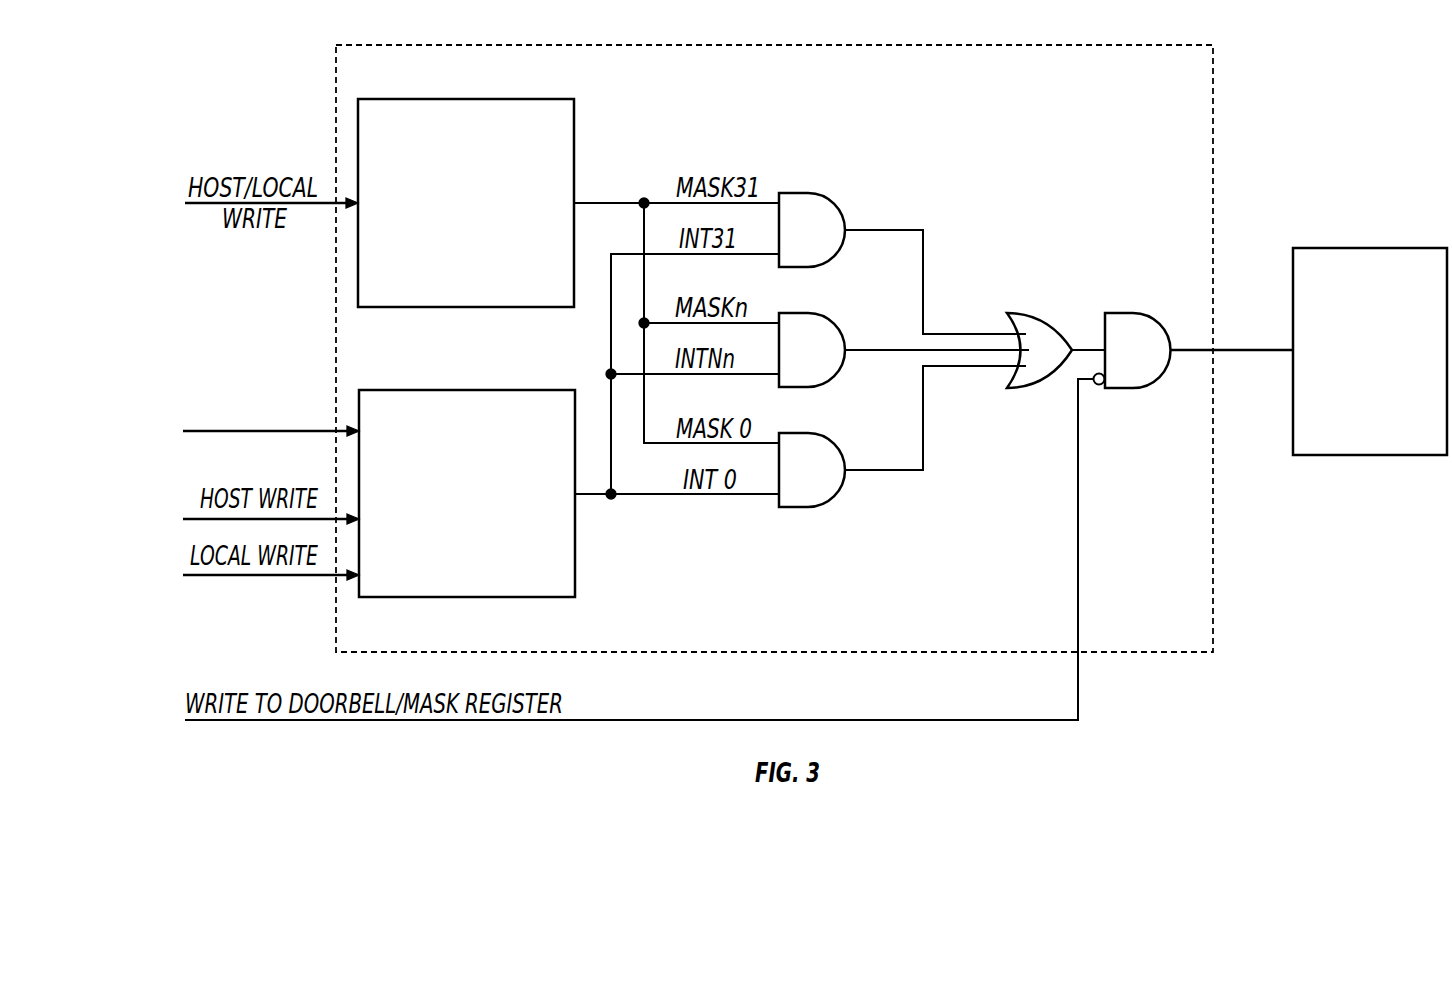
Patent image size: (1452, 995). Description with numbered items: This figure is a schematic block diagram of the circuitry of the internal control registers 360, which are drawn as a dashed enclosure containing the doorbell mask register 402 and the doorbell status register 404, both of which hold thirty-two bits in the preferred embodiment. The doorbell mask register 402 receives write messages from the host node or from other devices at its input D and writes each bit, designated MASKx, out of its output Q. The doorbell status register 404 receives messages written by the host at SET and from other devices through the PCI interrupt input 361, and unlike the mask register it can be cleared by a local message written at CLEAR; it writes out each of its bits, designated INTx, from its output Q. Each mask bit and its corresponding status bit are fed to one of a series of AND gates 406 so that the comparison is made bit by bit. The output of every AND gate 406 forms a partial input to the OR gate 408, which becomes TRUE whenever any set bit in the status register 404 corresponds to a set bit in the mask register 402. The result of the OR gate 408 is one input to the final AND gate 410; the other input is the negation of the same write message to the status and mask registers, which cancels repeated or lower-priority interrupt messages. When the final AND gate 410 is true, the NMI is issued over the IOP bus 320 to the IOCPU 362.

The internal control registers 360 is at (748, 44).
The doorbell mask register 402 is at (465, 99).
The doorbell status register 404 is at (465, 390).
The AND gates 406 is at (820, 193).
The OR gate 408 is at (1040, 313).
The final AND gate 410 is at (1150, 313).
The input-output processor bus 320 is at (1222, 350).
The PCI interrupt input 361 is at (262, 433).
The input-output processor (IOCPU) 362 is at (1380, 248).